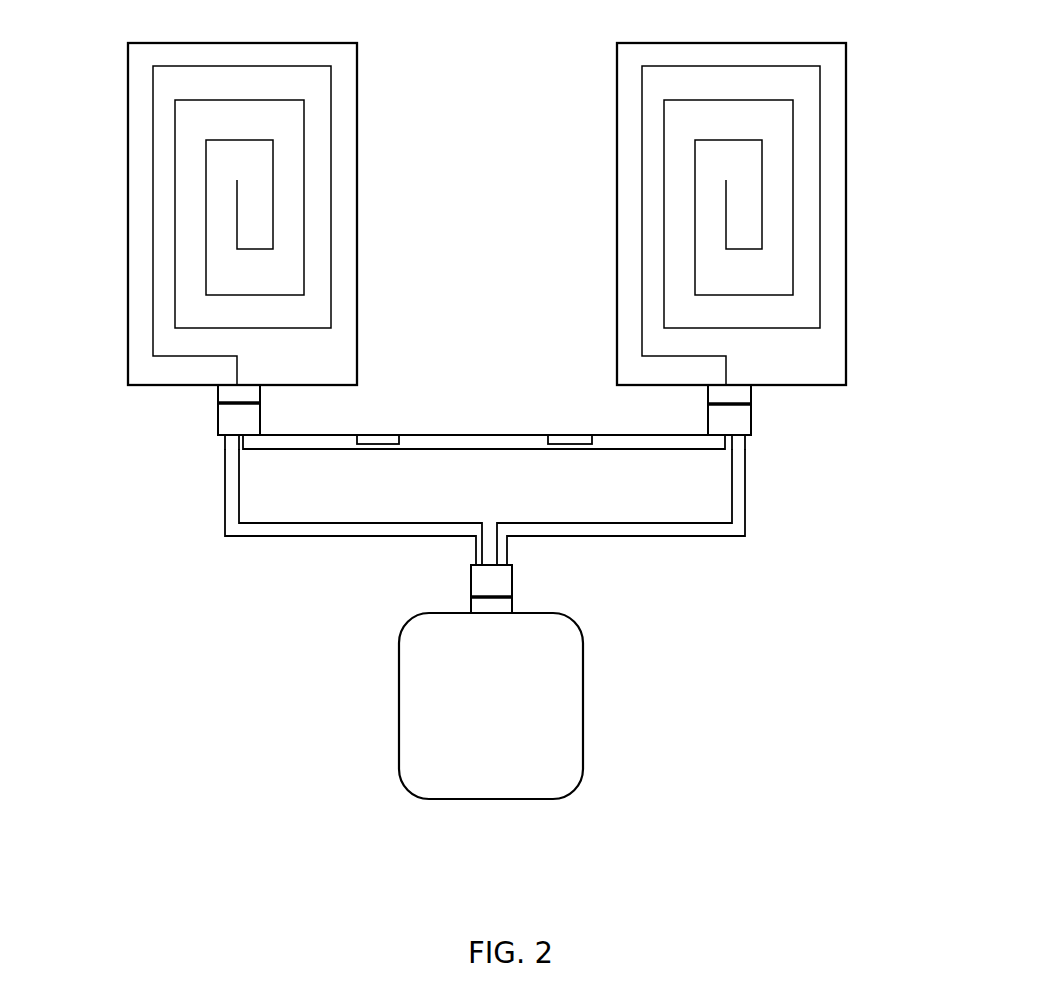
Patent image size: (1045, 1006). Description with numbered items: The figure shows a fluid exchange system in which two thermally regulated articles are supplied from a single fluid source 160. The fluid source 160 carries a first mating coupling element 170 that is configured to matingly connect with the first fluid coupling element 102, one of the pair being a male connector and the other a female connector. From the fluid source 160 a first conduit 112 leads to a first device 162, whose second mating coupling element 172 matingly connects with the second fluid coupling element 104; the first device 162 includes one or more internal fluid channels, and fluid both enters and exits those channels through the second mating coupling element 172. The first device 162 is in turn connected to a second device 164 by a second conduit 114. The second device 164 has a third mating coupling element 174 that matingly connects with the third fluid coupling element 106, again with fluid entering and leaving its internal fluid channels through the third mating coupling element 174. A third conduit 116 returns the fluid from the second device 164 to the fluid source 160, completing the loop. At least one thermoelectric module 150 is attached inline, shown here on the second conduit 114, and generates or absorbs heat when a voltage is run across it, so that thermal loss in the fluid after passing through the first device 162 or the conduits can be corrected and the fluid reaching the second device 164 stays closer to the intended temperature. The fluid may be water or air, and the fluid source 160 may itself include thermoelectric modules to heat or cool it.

The first fluid coupling element 102 is at (470, 580).
The second fluid coupling element 104 is at (752, 415).
The third fluid coupling element 106 is at (218, 419).
The first conduit 112 is at (625, 536).
The second conduit 114 is at (485, 434).
The third conduit 116 is at (280, 536).
The thermoelectric module 150 is at (378, 433).
The fluid source 160 is at (398, 729).
The first device 162 is at (617, 182).
The second device 164 is at (357, 170).
The first mating coupling element 170 is at (515, 606).
The second mating coupling element 172 is at (752, 395).
The third mating coupling element 174 is at (216, 391).